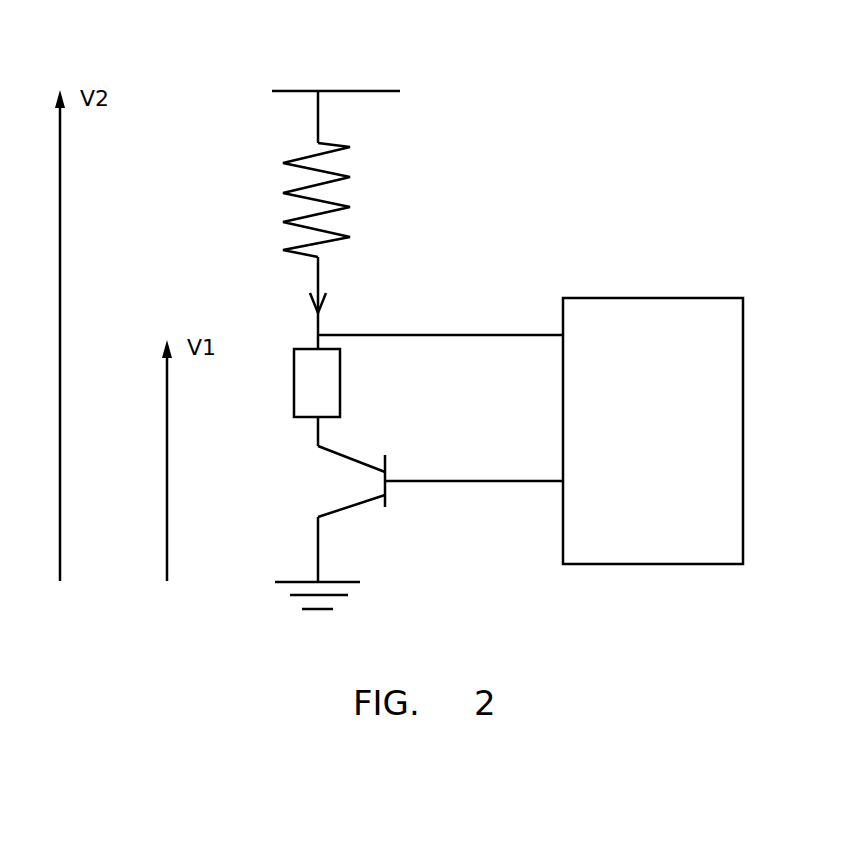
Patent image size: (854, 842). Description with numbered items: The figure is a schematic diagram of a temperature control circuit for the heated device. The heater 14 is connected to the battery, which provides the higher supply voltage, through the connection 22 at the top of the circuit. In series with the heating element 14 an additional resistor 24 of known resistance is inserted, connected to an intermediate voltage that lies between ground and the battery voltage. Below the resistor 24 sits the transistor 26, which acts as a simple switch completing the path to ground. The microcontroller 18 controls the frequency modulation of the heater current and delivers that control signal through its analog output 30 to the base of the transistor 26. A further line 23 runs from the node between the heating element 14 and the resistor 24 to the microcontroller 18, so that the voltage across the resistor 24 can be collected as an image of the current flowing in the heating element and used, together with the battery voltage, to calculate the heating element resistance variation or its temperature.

The connection 22 is at (362, 91).
The heater 14 is at (356, 192).
The voltage sense line 23 is at (563, 333).
The resistor 24 is at (360, 388).
The transistor 26 is at (388, 483).
The analog output 30 is at (563, 484).
The microcontroller 18 is at (660, 523).